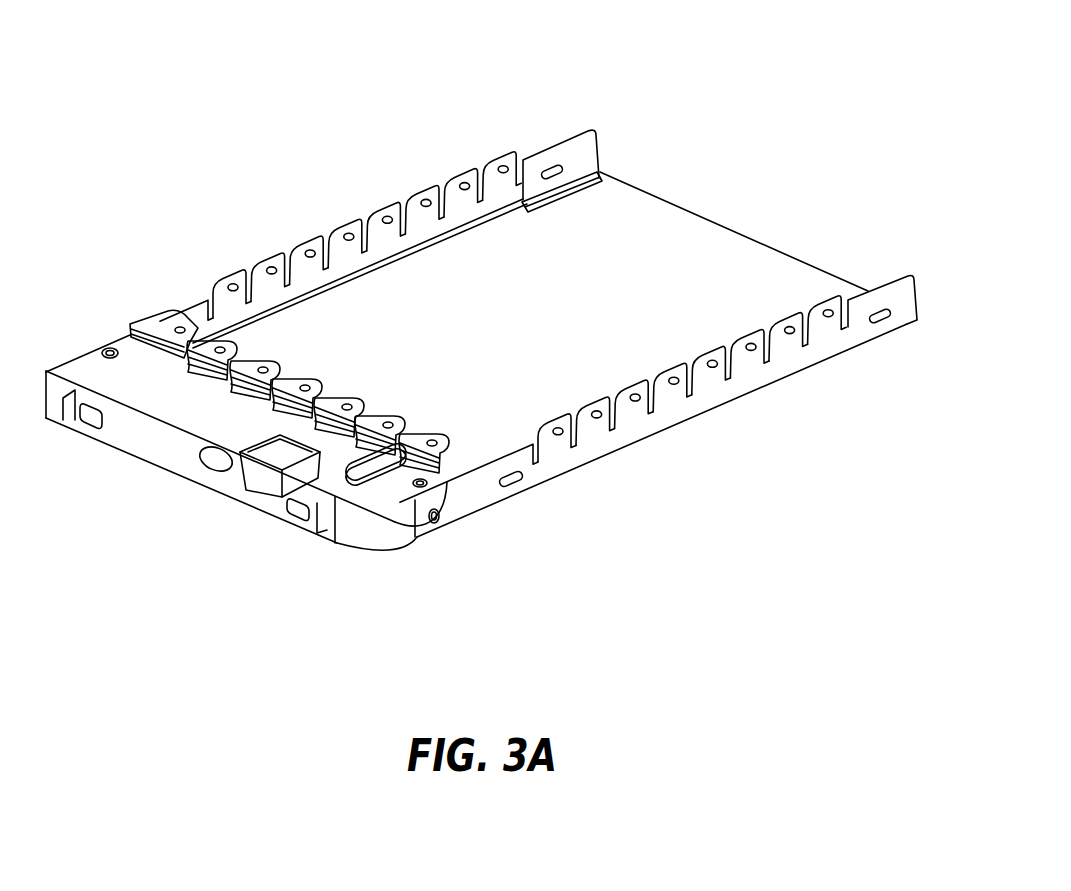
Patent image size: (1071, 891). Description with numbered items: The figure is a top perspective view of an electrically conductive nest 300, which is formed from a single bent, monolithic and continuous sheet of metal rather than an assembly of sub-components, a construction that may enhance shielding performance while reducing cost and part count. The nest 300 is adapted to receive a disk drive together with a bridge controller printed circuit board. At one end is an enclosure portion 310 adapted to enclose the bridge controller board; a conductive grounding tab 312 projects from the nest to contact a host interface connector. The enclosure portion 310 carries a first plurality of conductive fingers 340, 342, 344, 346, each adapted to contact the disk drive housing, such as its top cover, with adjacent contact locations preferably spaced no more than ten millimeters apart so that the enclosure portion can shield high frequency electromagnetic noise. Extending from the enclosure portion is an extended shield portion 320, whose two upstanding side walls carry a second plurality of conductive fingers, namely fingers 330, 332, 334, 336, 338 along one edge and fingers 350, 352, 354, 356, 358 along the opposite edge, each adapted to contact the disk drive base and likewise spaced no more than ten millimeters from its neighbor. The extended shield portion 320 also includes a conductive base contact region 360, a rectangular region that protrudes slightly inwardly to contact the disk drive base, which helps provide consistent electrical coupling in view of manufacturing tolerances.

The electrically conductive nest 300 is at (387, 62).
The enclosure portion 310 is at (133, 353).
The conductive grounding tab 312 is at (290, 450).
The extended shield portion 320 is at (713, 240).
The conductive finger 330 is at (552, 440).
The conductive finger 332 is at (590, 420).
The conductive finger 334 is at (633, 403).
The conductive finger 336 is at (673, 388).
The conductive finger 338 is at (707, 370).
The conductive finger 340 is at (252, 367).
The conductive finger 342 is at (295, 378).
The conductive finger 344 is at (337, 400).
The conductive finger 346 is at (380, 418).
The conductive finger 350 is at (258, 273).
The conductive finger 352 is at (297, 260).
The conductive finger 354 is at (337, 240).
The conductive finger 356 is at (373, 222).
The conductive finger 358 is at (415, 208).
The conductive base contact region 360 is at (577, 188).